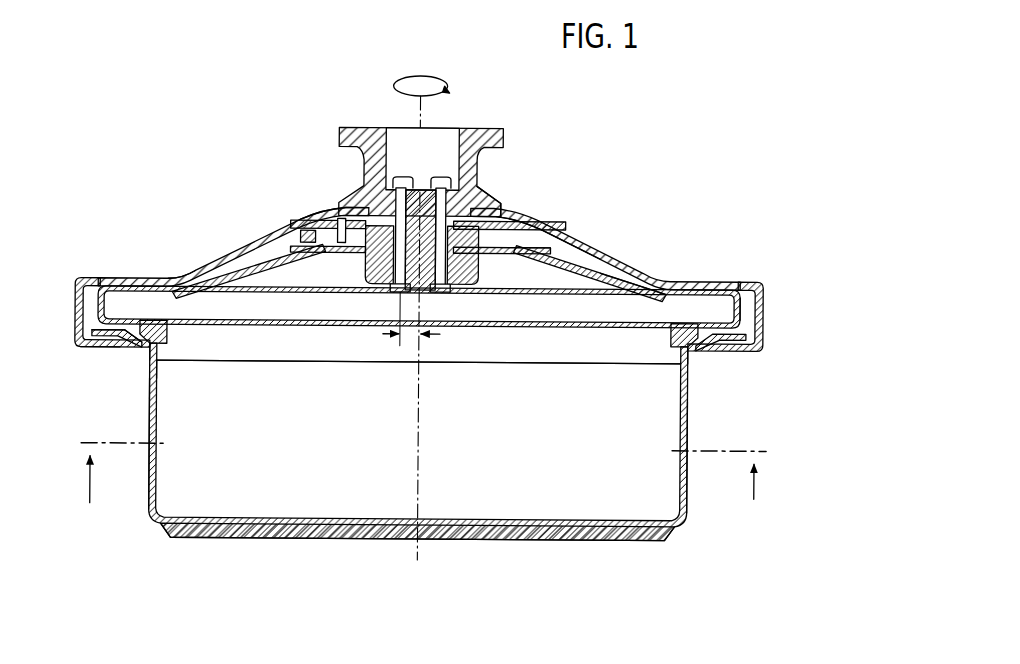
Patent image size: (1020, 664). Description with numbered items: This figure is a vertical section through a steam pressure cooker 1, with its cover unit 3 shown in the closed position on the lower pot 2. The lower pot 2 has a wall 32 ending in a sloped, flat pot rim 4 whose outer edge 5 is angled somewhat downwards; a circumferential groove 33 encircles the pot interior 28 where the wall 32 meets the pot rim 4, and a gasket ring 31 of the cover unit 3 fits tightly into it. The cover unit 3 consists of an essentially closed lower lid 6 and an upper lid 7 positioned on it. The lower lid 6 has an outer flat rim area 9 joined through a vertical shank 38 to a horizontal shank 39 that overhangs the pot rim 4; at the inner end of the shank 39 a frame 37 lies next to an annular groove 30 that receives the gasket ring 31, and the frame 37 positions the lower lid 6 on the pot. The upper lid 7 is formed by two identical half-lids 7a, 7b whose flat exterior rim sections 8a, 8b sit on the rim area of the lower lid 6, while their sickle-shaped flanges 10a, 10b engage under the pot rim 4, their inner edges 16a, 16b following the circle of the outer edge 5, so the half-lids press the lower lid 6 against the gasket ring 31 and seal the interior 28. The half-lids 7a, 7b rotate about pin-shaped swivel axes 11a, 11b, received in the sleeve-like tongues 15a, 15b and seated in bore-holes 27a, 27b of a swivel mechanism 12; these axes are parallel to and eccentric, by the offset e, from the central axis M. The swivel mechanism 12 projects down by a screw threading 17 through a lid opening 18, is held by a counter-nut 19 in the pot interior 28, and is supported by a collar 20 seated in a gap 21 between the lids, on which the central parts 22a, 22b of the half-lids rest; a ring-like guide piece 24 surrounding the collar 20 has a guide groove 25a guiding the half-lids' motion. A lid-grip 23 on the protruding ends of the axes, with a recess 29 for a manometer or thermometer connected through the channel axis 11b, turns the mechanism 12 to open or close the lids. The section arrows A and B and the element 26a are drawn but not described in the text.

The steam pressure cooker 1 is at (624, 241).
The lower pot 2 is at (693, 492).
The cover unit 3 is at (225, 242).
The pot rim 4 is at (127, 342).
The outer edge of the pot rim 5 is at (95, 348).
The lower lid 6 is at (618, 283).
The upper lid 7 is at (175, 277).
The half-lid 7a is at (345, 208).
The half-lid 7b is at (482, 226).
The flat exterior rim section 8a is at (105, 282).
The flat exterior rim section 8b is at (745, 283).
The outer flat rim area 9 is at (129, 289).
The sickle-shaped flange 10a is at (120, 346).
The sickle-shaped flange 10b is at (731, 352).
The swivel axis 11a is at (438, 292).
The swivel axis 11b is at (403, 292).
The swivel mechanism 12 is at (470, 208).
The convex tongue 15a is at (454, 186).
The convex tongue 15b is at (386, 186).
The inner edge of the flange 16a is at (158, 398).
The inner edge of the flange 16b is at (702, 352).
The screw threading 17 is at (372, 287).
The lid opening 18 is at (368, 263).
The counter-nut 19 is at (479, 278).
The collar 20 is at (502, 252).
The gap 21 is at (565, 266).
The central part 22a is at (330, 221).
The central part 22b is at (505, 228).
The lid-grip 23 is at (480, 143).
The guide piece 24 is at (547, 250).
The guide groove 25a is at (303, 233).
The pin 26a is at (342, 220).
The bore-hole 27a is at (447, 290).
The bore-hole 27b is at (395, 289).
The pot interior 28 is at (327, 461).
The recess 29 is at (398, 138).
The annular circumferential groove 30 is at (162, 323).
The gasket ring 31 is at (170, 338).
The wall 32 is at (156, 482).
The circumferential groove 33 is at (160, 368).
The frame 37 is at (157, 350).
The vertical circular shank 38 is at (80, 283).
The horizontal circular flat shank 39 is at (100, 333).
The central axis M is at (423, 447).
The eccentric position e is at (411, 331).
The section arrow A is at (124, 463).
The section arrow B is at (719, 465).